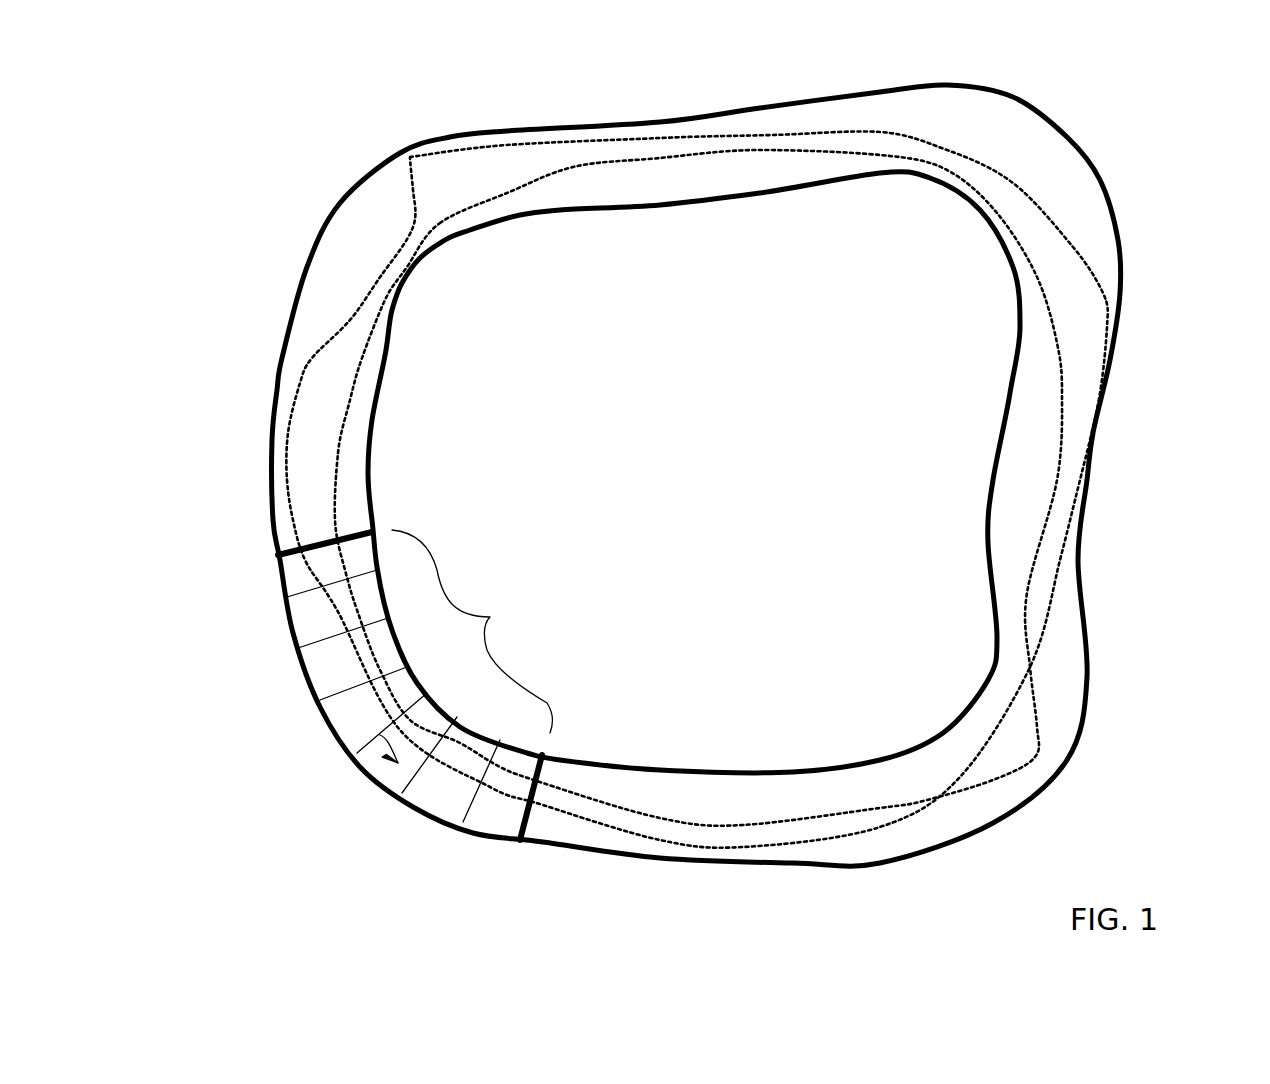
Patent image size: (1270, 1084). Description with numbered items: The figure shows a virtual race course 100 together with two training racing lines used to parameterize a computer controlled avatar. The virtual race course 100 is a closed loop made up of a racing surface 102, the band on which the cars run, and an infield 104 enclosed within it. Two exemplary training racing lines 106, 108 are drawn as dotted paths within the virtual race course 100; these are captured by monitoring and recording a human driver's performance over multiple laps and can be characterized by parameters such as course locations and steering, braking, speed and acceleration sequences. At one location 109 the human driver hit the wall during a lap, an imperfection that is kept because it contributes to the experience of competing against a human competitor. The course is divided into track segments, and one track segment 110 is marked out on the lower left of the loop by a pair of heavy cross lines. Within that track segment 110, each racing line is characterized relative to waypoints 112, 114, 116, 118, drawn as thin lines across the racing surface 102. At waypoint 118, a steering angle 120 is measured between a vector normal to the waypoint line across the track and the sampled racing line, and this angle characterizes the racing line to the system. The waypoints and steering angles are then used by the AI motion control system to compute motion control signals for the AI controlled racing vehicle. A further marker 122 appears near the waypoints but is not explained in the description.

The virtual race course 100 is at (292, 278).
The racing surface 102 is at (1067, 182).
The infield 104 is at (880, 446).
The training racing line 106 is at (1033, 757).
The training racing line 108 is at (1063, 558).
The wall hit location 109 is at (397, 138).
The track segment 110 is at (527, 593).
The waypoint 112 is at (335, 690).
The waypoint 114 is at (333, 638).
The waypoint 116 is at (473, 802).
The waypoint 118 is at (353, 747).
The steering angle 120 is at (773, 135).
The rib spacing 122 is at (380, 743).